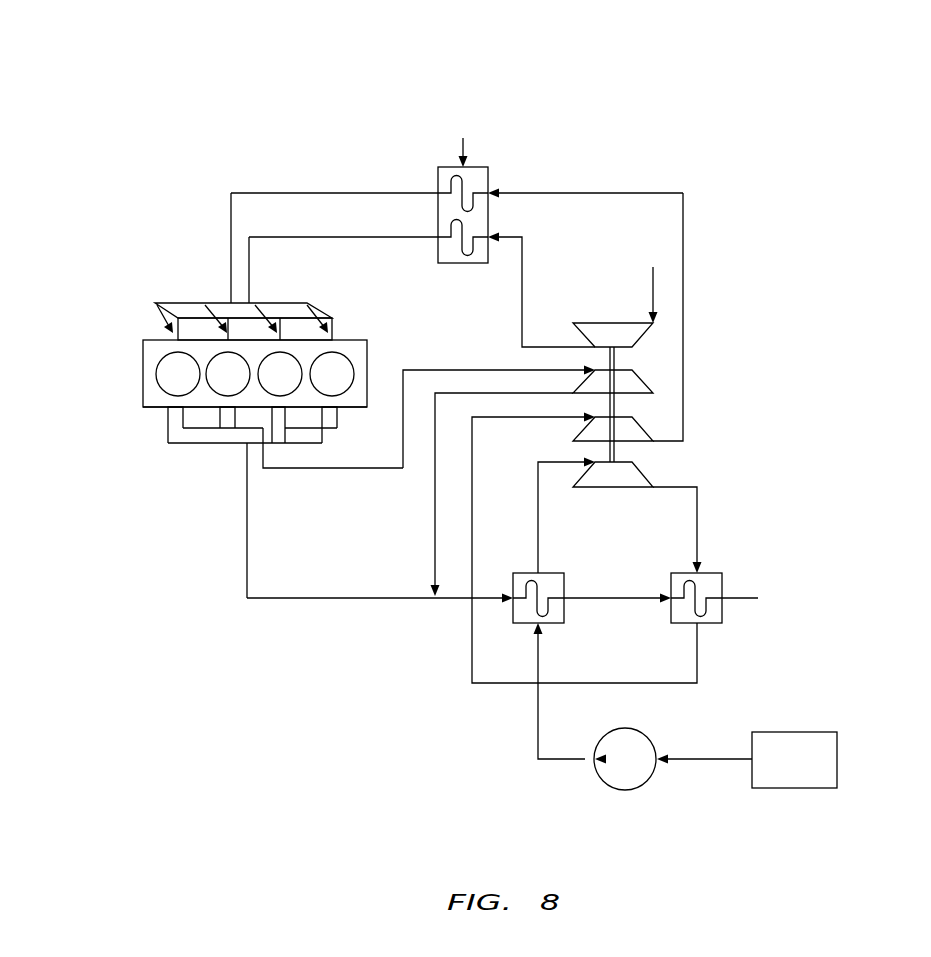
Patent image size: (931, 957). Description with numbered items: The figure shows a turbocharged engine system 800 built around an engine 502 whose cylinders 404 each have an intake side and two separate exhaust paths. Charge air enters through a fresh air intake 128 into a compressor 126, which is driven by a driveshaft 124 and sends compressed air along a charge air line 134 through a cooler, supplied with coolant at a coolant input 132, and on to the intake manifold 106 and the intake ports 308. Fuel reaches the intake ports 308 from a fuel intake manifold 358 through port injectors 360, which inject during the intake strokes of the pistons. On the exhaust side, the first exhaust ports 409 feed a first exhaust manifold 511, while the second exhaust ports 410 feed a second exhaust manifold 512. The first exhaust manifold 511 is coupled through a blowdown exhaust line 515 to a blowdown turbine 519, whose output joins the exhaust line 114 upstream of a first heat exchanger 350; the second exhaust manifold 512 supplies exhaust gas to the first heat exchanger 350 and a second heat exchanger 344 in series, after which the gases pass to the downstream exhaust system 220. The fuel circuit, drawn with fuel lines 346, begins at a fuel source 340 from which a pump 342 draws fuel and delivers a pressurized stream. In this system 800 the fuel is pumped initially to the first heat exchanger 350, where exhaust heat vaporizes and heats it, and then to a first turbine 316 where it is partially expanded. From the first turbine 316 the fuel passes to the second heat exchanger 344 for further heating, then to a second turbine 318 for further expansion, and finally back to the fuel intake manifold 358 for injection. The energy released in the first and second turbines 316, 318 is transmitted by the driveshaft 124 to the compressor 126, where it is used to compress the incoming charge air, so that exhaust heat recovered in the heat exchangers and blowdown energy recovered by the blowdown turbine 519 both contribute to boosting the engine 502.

The turbocharged engine system 800 is at (366, 72).
The engine 502 is at (68, 410).
The cylinders 404 is at (168, 378).
The intake ports 308 is at (186, 324).
The fuel intake manifold 358 is at (174, 300).
The port injectors 360 is at (158, 315).
The intake manifold 106 is at (292, 312).
The second exhaust ports 410 is at (168, 429).
The first exhaust ports 409 is at (337, 421).
The second exhaust manifold 512 is at (197, 445).
The first exhaust manifold 511 is at (307, 424).
The exhaust line 114 is at (305, 598).
The blowdown exhaust line 515 is at (453, 370).
The charge air line 134 is at (523, 258).
The coolant input 132 is at (462, 140).
The fuel lines 346 is at (319, 192).
The compressor 126 is at (612, 330).
The fresh air intake 128 is at (653, 300).
The driveshaft 124 is at (616, 356).
The blowdown turbine 519 is at (648, 380).
The second turbine 318 is at (640, 437).
The first turbine 316 is at (614, 487).
The first heat exchanger 350 is at (521, 611).
The second heat exchanger 344 is at (712, 580).
The downstream exhaust system 220 is at (752, 600).
The fuel source 340 is at (811, 740).
The pump 342 is at (622, 780).